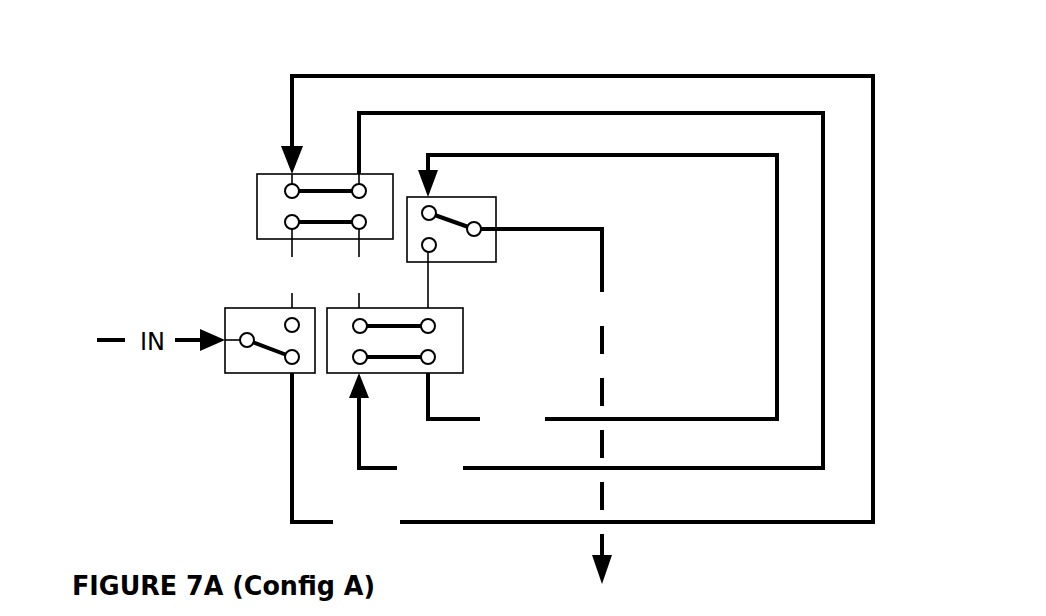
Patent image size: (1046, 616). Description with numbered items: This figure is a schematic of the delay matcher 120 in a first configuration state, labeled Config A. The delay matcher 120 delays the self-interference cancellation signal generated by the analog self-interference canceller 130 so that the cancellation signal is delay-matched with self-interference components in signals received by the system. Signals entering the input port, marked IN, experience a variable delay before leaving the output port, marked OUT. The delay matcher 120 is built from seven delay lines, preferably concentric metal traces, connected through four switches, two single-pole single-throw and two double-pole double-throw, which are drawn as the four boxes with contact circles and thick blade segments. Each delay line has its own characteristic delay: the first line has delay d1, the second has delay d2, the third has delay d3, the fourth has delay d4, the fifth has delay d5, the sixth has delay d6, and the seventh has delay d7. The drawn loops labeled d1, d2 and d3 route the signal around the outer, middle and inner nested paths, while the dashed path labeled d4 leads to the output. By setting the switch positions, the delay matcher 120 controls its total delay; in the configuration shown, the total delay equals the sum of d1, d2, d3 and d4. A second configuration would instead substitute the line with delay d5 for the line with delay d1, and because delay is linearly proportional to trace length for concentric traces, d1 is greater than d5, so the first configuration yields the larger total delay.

The delay matcher 120 is at (577, 290).
The analog self-interference canceller 130 is at (708, 585).
The delay of delay line 1 d1 is at (577, 307).
The delay of delay line 2 d2 is at (586, 299).
The delay of delay line 3 d3 is at (597, 295).
The delay of delay line 4 d4 is at (549, 393).
The delay of delay line 5 d5 is at (303, 274).
The delay of delay line 6 d6 is at (360, 274).
The delay of delay line 7 d7 is at (419, 285).